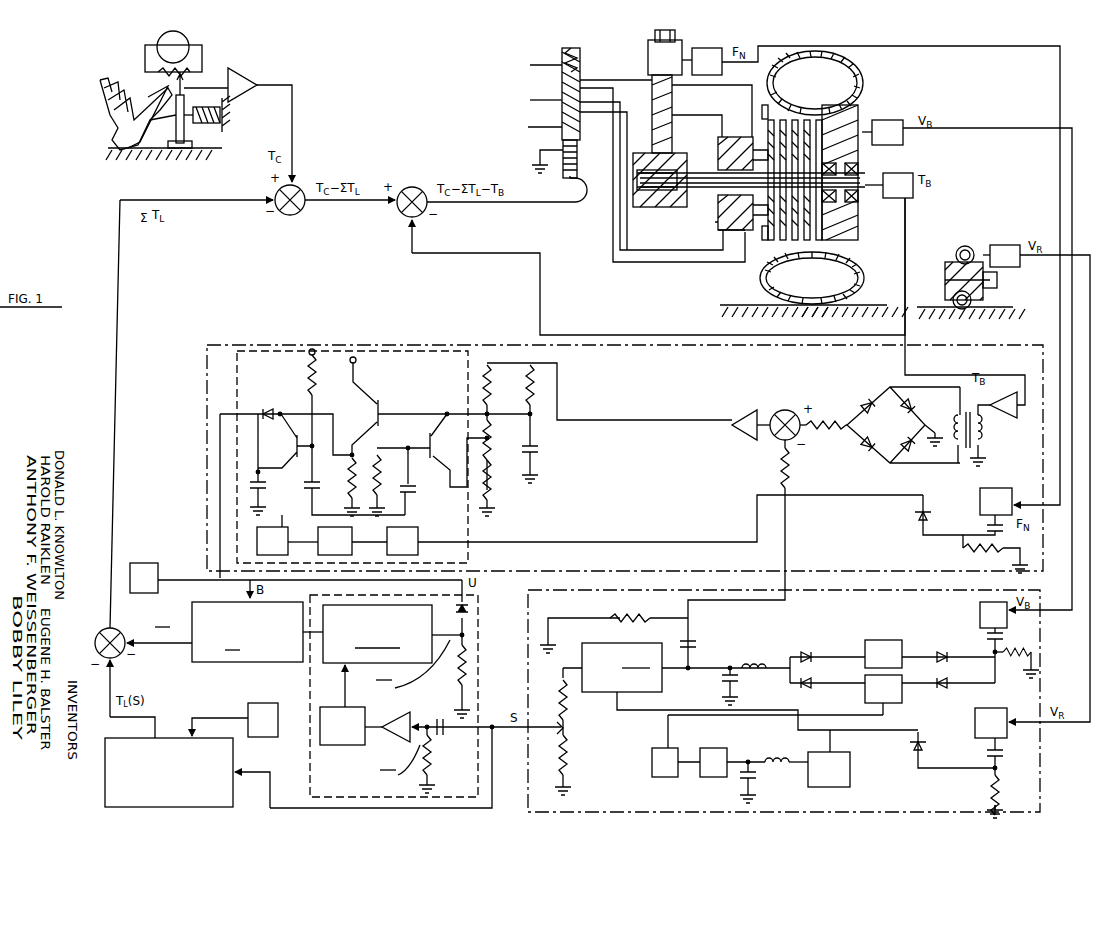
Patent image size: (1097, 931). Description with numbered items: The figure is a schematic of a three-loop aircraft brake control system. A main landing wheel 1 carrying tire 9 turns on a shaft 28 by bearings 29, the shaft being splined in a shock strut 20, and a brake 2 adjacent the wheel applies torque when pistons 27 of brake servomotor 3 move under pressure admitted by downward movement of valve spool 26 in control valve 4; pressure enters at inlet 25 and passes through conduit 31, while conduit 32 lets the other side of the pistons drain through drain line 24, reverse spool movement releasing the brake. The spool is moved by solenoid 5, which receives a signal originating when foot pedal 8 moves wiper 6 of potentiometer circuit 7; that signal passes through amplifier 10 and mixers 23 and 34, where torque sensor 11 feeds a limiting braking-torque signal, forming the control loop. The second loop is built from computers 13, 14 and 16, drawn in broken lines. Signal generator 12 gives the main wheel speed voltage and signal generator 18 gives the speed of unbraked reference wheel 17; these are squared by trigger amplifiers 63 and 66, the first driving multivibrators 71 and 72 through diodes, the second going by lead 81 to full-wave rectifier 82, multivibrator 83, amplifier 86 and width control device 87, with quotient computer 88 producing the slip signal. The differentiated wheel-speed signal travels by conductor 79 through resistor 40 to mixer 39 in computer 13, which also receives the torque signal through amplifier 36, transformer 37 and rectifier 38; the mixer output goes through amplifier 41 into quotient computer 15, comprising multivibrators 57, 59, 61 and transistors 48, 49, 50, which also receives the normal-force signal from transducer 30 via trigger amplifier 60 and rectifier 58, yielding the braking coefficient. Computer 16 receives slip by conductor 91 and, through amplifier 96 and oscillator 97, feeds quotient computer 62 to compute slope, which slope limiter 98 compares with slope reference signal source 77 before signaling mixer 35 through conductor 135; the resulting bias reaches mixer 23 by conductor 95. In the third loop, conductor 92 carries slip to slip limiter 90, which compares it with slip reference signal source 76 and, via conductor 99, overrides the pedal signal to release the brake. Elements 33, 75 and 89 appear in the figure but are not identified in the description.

The main landing wheel 1 is at (850, 120).
The brake 2 is at (808, 208).
The brake servomotor 3 is at (718, 152).
The control valve 4 is at (582, 68).
The solenoid 5 is at (580, 162).
The wiper 6 is at (175, 82).
The potentiometer circuit 7 is at (145, 58).
The foot pedal 8 is at (158, 142).
The tire 9 is at (852, 70).
The amplifier 10 is at (250, 72).
The torque sensor 11 is at (886, 174).
The signal generator 12 is at (876, 122).
The computer 13 is at (702, 395).
The slip computer 14 is at (878, 612).
The quotient computer 15 is at (410, 385).
The computer 16 is at (458, 766).
The reference wheel 17 is at (945, 282).
The signal generator 18 is at (998, 246).
The shock strut 20 is at (650, 52).
The mixer 23 is at (298, 213).
The drain line 24 is at (538, 62).
The inlet 25 is at (546, 96).
The valve spool 26 is at (584, 100).
The pistons 27 is at (718, 212).
The shaft 28 is at (860, 196).
The bearings 29 is at (848, 162).
The transducer 30 is at (700, 48).
The conduit 31 is at (590, 116).
The conduit 32 is at (600, 84).
The lower piston 33 is at (715, 224).
The mixer 34 is at (406, 188).
The mixer 35 is at (100, 632).
The amplifier 36 is at (1004, 418).
The transformer 37 is at (982, 457).
The rectifier 38 is at (880, 448).
The mixer 39 is at (788, 408).
The resistor 40 is at (788, 484).
The amplifier 41 is at (745, 438).
The transistor 48 is at (430, 440).
The transistor 49 is at (374, 414).
The transistor 50 is at (292, 443).
The multivibrator 57 is at (418, 540).
The rectifier 58 is at (916, 514).
The multivibrator 59 is at (352, 540).
The trigger amplifier 60 is at (980, 502).
The multivibrator 61 is at (288, 540).
The quotient computer 62 is at (328, 664).
The trigger amplifier 63 is at (980, 614).
The trigger amplifier 66 is at (978, 712).
The multivibrator 71 is at (865, 648).
The multivibrator 72 is at (865, 700).
The connecting line 75 is at (760, 717).
The slip reference signal source 76 is at (278, 718).
The slope reference signal source 77 is at (160, 572).
The conductor 79 is at (648, 630).
The lead 81 is at (990, 772).
The full-wave rectifier 82 is at (910, 750).
The multivibrator 83 is at (830, 788).
The amplifier 86 is at (730, 752).
The width control device 87 is at (680, 752).
The quotient computer 88 is at (607, 693).
The potentiometer 89 is at (563, 676).
The slip limiter 90 is at (236, 760).
The conductor 91 is at (488, 725).
The conductor 92 is at (493, 745).
The conductor 95 is at (258, 198).
The amplifier 96 is at (405, 716).
The oscillator 97 is at (348, 745).
The slope limiter 98 is at (262, 663).
The conductor 99 is at (148, 718).
The conductor 135 is at (178, 648).